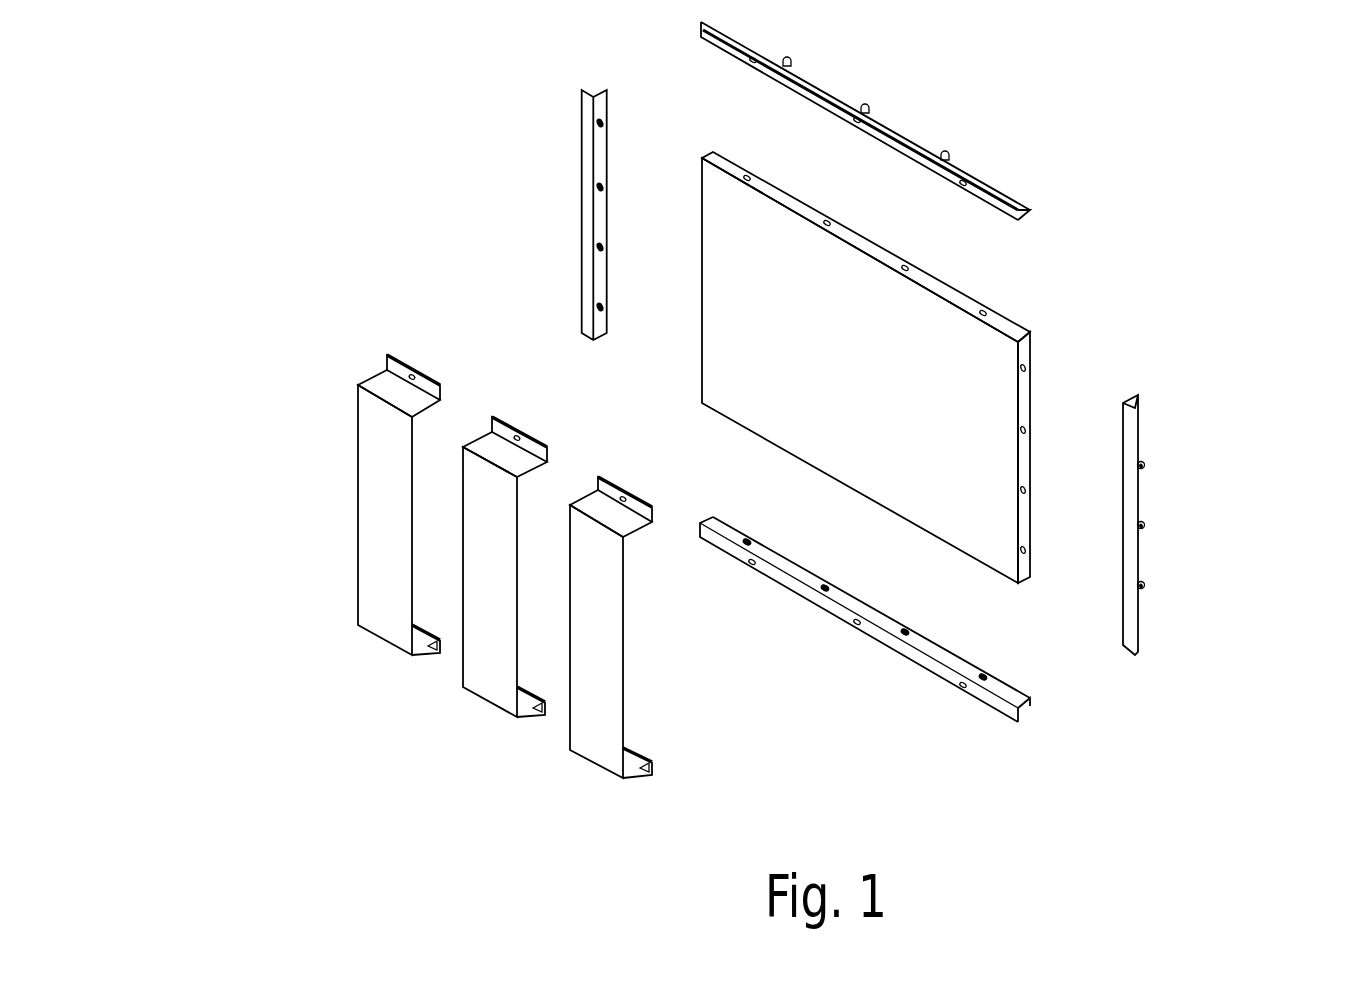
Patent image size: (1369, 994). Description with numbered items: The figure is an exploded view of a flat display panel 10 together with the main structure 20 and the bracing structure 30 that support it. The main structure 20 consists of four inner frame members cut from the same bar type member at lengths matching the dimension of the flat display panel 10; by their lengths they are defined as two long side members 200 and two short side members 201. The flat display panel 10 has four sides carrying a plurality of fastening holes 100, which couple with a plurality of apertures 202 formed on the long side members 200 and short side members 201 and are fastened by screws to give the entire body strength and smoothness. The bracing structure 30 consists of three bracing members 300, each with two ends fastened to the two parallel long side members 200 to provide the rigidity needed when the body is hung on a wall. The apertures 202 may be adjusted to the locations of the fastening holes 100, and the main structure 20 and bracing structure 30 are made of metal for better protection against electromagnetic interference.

The flat display panel 10 is at (950, 367).
The fastening holes 100 is at (1025, 367).
The main structure 20 is at (510, 265).
The long side members 200 is at (827, 90).
The short side members 201 is at (590, 187).
The apertures 202 is at (689, 124).
The bracing structure 30 is at (290, 573).
The bracing members 300 is at (385, 645).